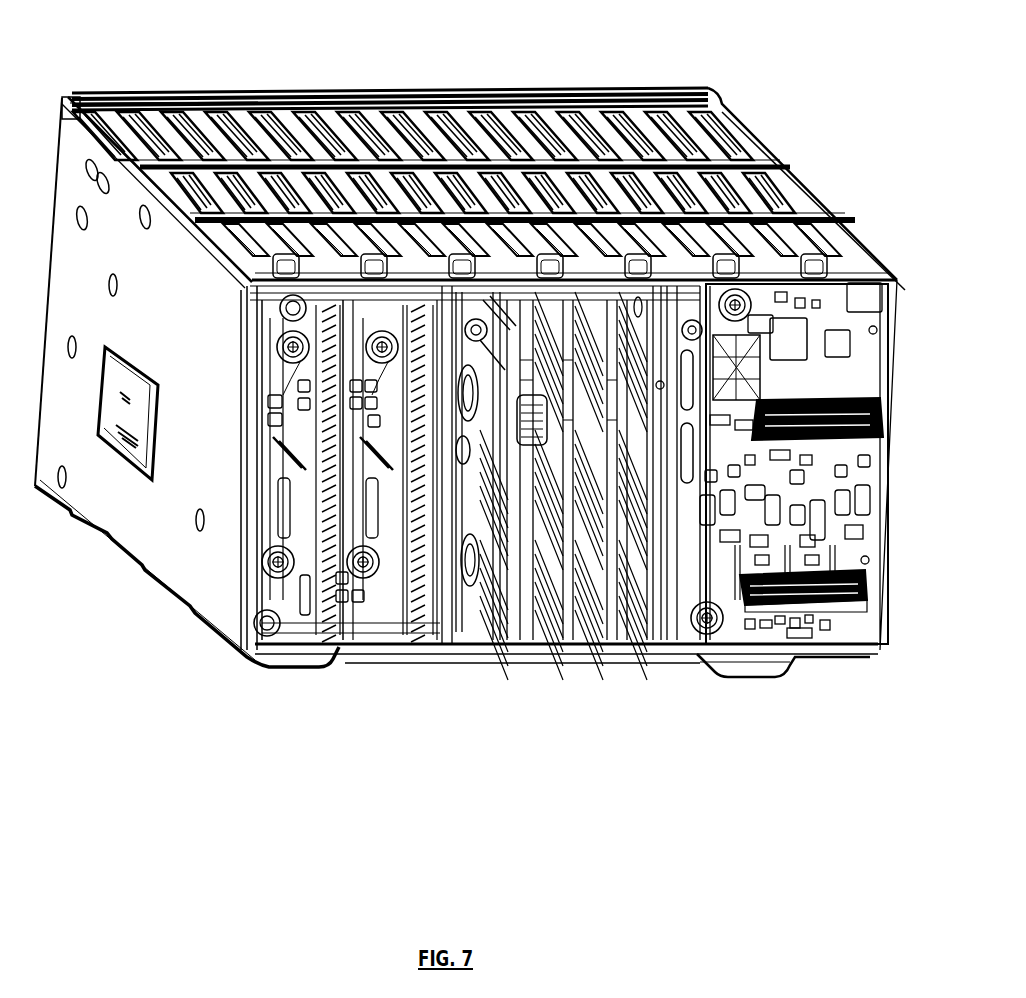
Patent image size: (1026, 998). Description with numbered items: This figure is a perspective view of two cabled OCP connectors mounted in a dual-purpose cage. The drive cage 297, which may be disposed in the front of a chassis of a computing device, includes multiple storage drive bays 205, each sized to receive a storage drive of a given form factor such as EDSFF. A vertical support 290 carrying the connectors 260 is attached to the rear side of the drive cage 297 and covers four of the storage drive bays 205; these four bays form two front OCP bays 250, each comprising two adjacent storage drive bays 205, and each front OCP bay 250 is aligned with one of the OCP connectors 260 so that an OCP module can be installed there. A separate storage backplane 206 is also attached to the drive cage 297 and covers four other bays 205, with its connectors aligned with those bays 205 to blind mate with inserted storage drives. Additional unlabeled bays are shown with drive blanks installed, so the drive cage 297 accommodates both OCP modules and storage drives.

The storage drive bay 205 is at (695, 84).
The front OCP bay 250 is at (248, 52).
The drive cage 297 is at (155, 547).
The vertical support 290 is at (307, 603).
The OCP connector 260 is at (398, 610).
The storage backplane 206 is at (832, 632).